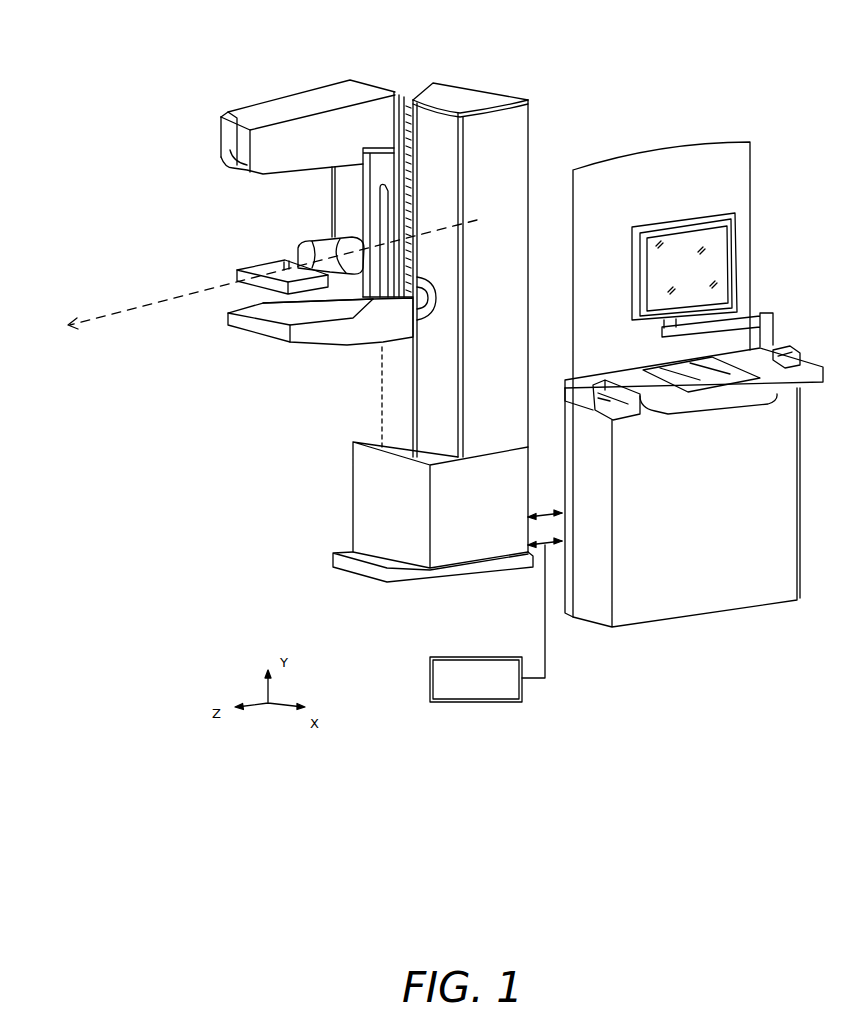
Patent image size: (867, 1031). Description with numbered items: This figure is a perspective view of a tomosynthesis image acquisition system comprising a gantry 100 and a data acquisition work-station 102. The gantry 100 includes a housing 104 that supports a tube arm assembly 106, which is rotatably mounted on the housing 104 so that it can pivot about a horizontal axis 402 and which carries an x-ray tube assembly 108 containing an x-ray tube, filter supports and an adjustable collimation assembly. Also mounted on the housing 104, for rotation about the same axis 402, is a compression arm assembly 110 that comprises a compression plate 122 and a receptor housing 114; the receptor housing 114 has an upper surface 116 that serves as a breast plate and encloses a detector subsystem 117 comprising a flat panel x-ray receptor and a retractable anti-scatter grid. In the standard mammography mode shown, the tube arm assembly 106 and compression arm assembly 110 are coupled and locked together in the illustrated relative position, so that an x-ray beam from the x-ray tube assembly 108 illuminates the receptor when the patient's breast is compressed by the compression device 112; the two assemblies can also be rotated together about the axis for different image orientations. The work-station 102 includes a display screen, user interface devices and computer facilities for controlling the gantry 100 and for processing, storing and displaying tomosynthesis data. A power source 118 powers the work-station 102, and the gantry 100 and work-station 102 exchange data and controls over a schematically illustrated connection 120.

The gantry 100 is at (493, 42).
The data acquisition work-station 102 is at (702, 132).
The housing 104 is at (512, 100).
The tube arm assembly 106 is at (390, 78).
The x-ray tube assembly 108 is at (245, 181).
The compression arm assembly 110 is at (197, 258).
The compression device 112 is at (276, 240).
The receptor housing 114 is at (230, 318).
The upper surface 116 is at (247, 306).
The detector subsystem 117 is at (351, 356).
The power source 118 is at (430, 679).
The connection 120 is at (539, 511).
The compression plate 122 is at (250, 264).
The horizontal axis 402 is at (252, 284).